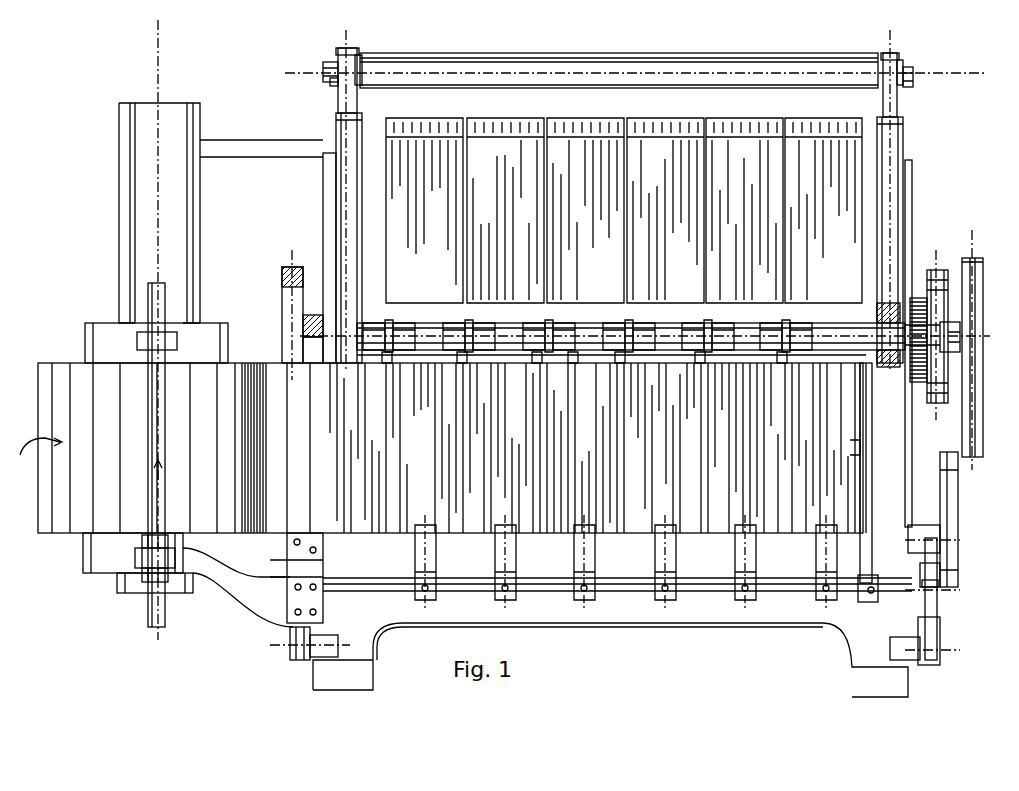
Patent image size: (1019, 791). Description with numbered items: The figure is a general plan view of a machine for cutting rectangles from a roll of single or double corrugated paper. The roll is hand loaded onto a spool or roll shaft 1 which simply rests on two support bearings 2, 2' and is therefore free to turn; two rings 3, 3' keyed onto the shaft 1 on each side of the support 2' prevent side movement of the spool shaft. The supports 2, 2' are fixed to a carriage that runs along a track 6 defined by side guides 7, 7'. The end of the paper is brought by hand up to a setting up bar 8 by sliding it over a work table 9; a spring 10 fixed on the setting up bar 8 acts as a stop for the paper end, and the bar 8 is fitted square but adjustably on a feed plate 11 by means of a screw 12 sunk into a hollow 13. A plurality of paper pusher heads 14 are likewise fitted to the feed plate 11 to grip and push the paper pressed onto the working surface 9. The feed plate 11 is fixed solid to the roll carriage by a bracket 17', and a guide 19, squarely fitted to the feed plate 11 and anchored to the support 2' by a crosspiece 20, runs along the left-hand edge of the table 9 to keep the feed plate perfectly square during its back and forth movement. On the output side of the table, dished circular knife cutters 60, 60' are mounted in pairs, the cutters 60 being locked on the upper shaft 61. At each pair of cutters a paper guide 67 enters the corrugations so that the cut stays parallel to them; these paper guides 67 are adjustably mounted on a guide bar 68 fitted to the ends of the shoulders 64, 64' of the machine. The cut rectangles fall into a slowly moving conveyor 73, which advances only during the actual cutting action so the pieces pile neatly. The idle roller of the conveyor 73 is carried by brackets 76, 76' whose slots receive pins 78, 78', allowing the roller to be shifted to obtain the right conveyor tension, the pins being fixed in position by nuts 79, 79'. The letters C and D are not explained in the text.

The spool or roll shaft 1 is at (153, 600).
The support bearing 2 is at (128, 455).
The support bearing 2' is at (131, 581).
The ring 3 is at (129, 568).
The ring 3' is at (136, 598).
The track 6 is at (147, 180).
The side guide 7 is at (140, 213).
The side guide 7' is at (201, 213).
The setting up bar 8 is at (866, 458).
The work table 9 is at (327, 287).
The spring 10 is at (858, 447).
The feed plate 11 is at (690, 612).
The screw 12 is at (585, 588).
The hollow 13 is at (725, 590).
The paper pusher head 14 is at (428, 566).
The bracket 17' is at (263, 623).
The guide 19 is at (300, 343).
The crosspiece 20 is at (267, 550).
The circular knife cutter 60 is at (587, 326).
The circular knife cutter 60' is at (579, 327).
The upper shaft 61 is at (508, 326).
The shoulder 64 is at (912, 234).
The shoulder 64' is at (328, 236).
The paper guide 67 is at (387, 363).
The guide bar 68 is at (573, 358).
The conveyor 73 is at (375, 110).
The bracket 76 is at (914, 85).
The bracket 76' is at (328, 77).
The pin 78 is at (925, 83).
The pin 78' is at (316, 71).
The nut 79 is at (922, 72).
The nut 79' is at (316, 82).
The cutting segments C is at (405, 215).
The drum D is at (64, 375).